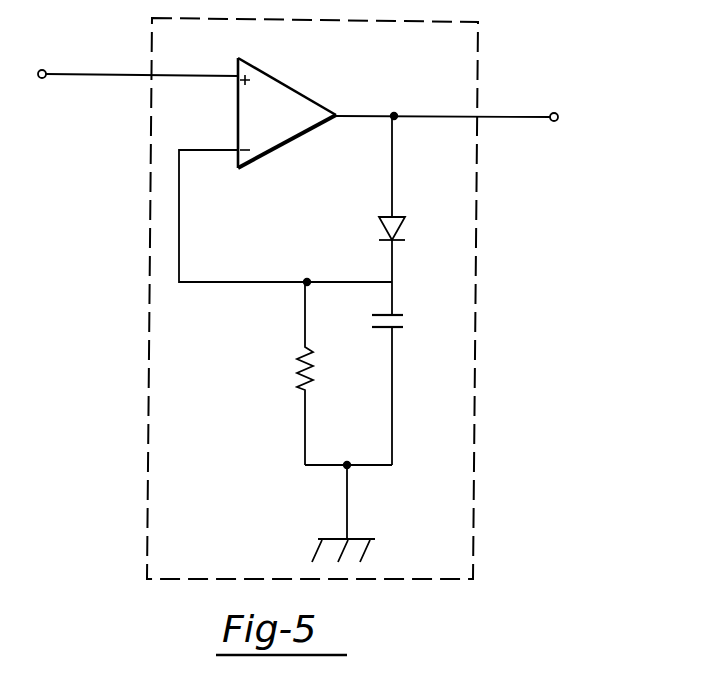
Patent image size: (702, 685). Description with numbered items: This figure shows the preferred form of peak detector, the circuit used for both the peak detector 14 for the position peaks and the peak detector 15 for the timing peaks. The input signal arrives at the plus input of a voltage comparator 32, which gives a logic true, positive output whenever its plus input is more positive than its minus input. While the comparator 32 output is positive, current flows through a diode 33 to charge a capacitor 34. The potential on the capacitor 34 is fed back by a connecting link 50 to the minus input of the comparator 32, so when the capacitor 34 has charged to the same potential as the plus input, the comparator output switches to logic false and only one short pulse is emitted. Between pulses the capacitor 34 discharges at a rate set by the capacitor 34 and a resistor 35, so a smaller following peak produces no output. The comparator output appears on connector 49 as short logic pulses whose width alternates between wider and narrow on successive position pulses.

The peak detector 14 is at (474, 495).
The peak detector 15 is at (362, 298).
The voltage comparator 32 is at (272, 153).
The diode 33 is at (396, 216).
The capacitor 34 is at (403, 327).
The resistor 35 is at (312, 368).
The connector 49 is at (495, 118).
The connecting link 50 is at (250, 243).